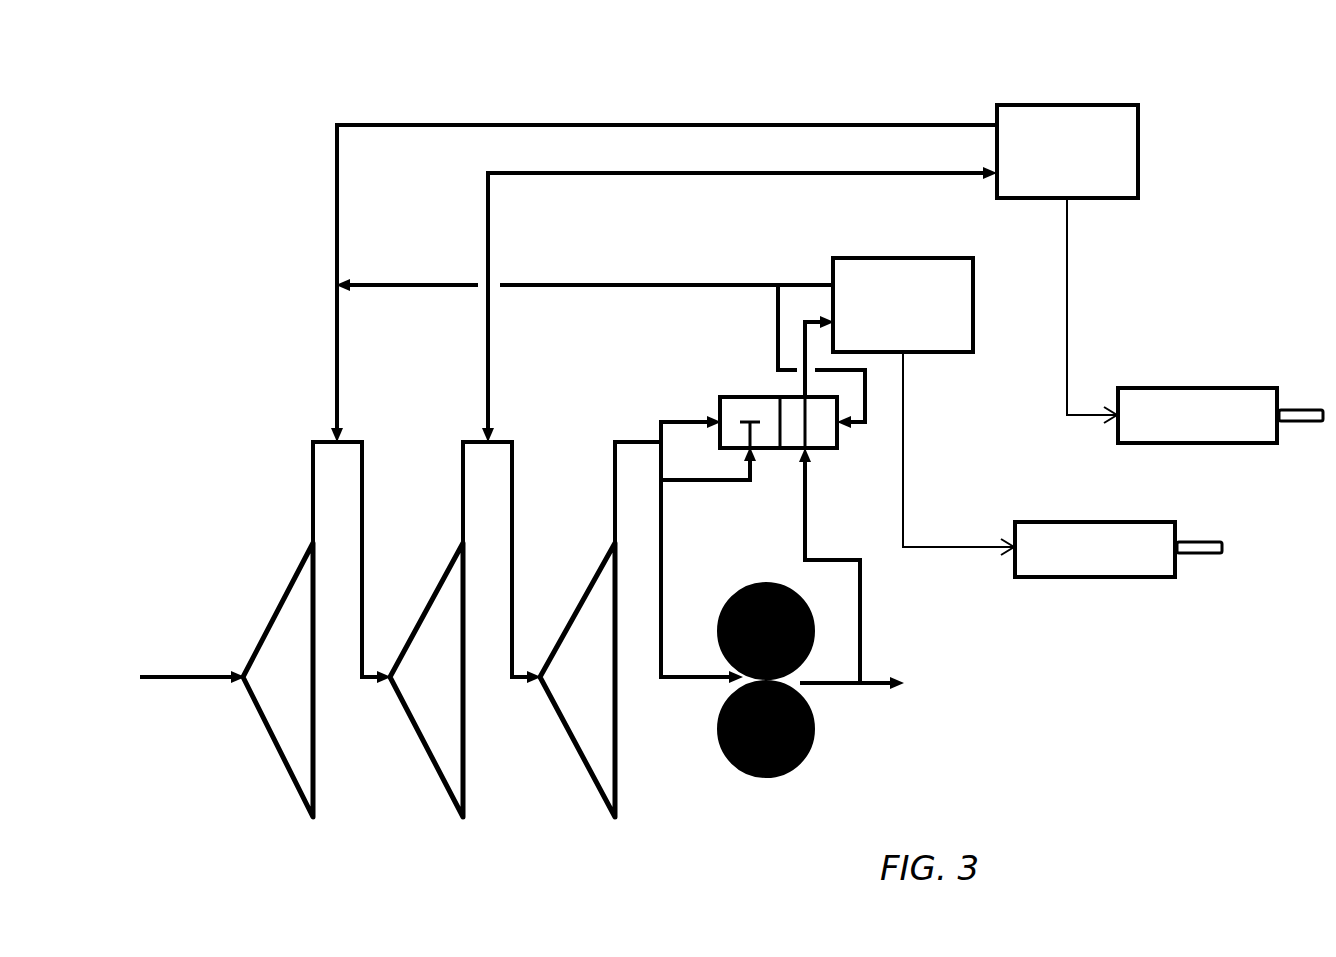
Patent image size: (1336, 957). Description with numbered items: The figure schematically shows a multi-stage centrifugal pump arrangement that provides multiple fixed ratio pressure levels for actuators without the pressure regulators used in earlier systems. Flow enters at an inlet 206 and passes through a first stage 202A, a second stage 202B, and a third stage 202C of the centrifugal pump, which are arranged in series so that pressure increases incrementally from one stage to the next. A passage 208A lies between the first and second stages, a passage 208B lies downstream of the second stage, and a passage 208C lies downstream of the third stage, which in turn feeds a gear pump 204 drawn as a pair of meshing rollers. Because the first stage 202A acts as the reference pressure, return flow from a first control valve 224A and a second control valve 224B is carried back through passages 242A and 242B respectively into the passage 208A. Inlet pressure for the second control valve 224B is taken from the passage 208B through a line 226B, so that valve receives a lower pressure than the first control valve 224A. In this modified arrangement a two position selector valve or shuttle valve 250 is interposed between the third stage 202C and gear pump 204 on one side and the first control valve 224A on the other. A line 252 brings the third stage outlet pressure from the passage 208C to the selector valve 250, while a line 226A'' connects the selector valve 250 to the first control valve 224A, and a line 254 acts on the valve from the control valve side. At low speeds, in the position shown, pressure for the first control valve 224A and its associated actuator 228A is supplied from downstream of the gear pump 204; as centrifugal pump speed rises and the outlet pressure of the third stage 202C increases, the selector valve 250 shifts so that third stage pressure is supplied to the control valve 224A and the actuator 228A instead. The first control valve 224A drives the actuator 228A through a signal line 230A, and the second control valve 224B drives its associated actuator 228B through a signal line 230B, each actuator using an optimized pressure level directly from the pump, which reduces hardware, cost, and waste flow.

The inlet fluid flow 206 is at (190, 675).
The first stage 202A is at (278, 775).
The second stage 202B is at (437, 765).
The third stage 202C is at (590, 770).
The passage 208A is at (367, 518).
The passage 208B is at (517, 525).
The passage 208C is at (615, 470).
The gear pump 204 is at (788, 775).
The selector valve 250 is at (694, 387).
The selector valve inlet line 252 is at (685, 420).
The control valve 1 pressure line 226A'' is at (749, 369).
The selector valve return line 254 is at (864, 417).
The passage 242A is at (640, 268).
The passage 242B is at (645, 118).
The control valve 2 pressure line 226B is at (803, 160).
The first control valve 224A is at (900, 257).
The second control valve 224B is at (1063, 103).
The control valve 1 actuator signal line 230A is at (906, 480).
The control valve 2 actuator signal line 230B is at (1072, 328).
The actuator 228A is at (1097, 522).
The actuator 228B is at (1192, 385).